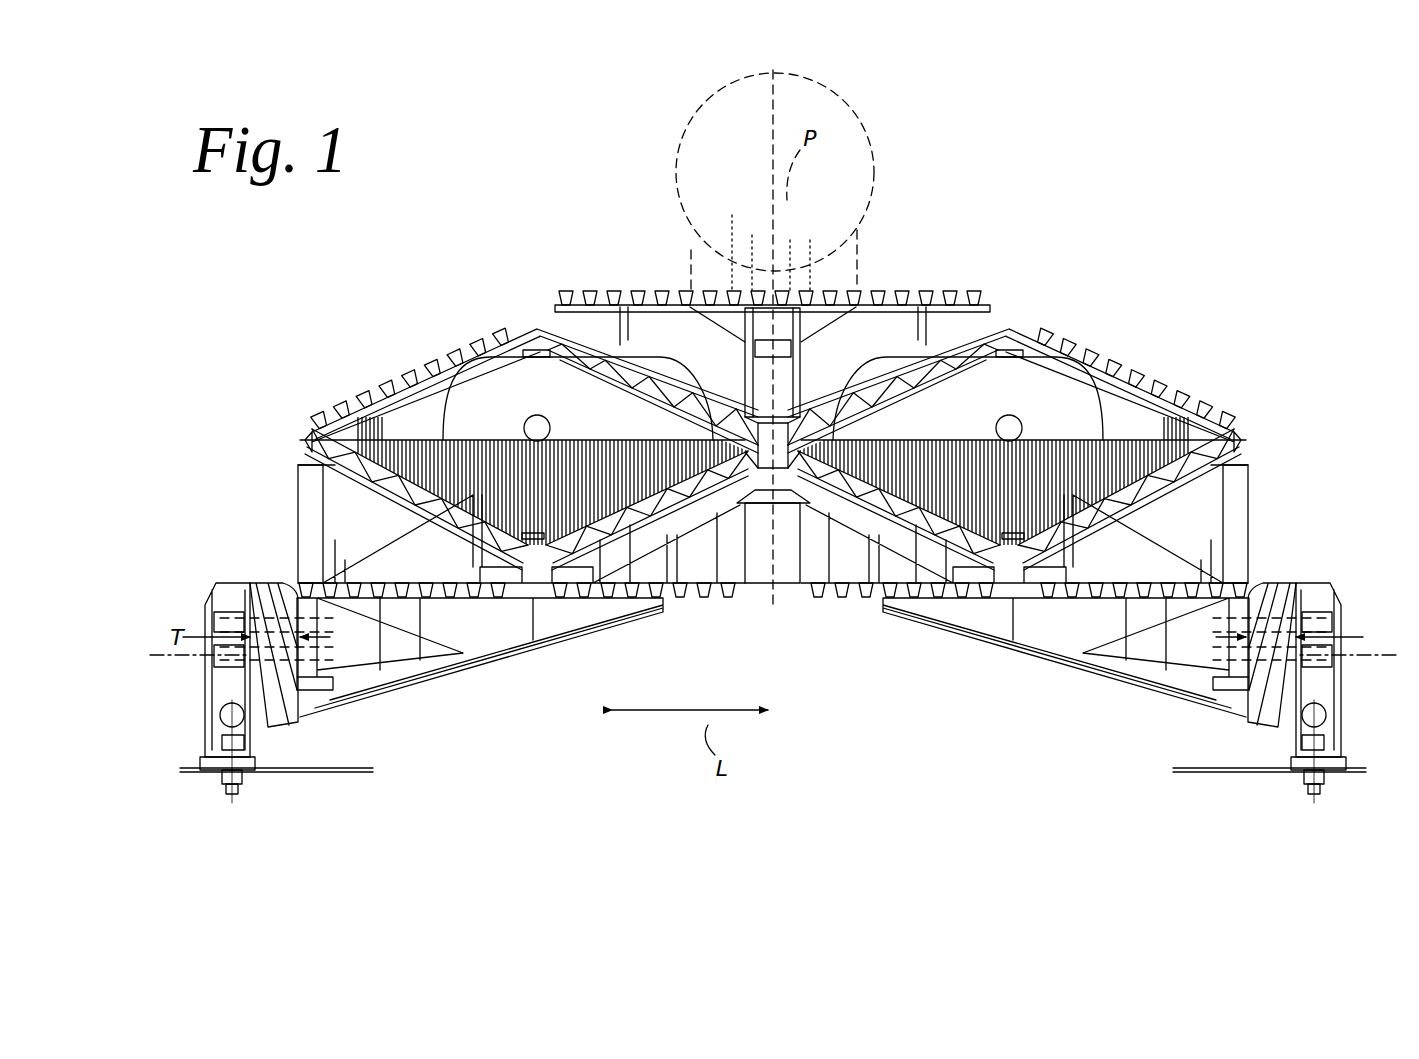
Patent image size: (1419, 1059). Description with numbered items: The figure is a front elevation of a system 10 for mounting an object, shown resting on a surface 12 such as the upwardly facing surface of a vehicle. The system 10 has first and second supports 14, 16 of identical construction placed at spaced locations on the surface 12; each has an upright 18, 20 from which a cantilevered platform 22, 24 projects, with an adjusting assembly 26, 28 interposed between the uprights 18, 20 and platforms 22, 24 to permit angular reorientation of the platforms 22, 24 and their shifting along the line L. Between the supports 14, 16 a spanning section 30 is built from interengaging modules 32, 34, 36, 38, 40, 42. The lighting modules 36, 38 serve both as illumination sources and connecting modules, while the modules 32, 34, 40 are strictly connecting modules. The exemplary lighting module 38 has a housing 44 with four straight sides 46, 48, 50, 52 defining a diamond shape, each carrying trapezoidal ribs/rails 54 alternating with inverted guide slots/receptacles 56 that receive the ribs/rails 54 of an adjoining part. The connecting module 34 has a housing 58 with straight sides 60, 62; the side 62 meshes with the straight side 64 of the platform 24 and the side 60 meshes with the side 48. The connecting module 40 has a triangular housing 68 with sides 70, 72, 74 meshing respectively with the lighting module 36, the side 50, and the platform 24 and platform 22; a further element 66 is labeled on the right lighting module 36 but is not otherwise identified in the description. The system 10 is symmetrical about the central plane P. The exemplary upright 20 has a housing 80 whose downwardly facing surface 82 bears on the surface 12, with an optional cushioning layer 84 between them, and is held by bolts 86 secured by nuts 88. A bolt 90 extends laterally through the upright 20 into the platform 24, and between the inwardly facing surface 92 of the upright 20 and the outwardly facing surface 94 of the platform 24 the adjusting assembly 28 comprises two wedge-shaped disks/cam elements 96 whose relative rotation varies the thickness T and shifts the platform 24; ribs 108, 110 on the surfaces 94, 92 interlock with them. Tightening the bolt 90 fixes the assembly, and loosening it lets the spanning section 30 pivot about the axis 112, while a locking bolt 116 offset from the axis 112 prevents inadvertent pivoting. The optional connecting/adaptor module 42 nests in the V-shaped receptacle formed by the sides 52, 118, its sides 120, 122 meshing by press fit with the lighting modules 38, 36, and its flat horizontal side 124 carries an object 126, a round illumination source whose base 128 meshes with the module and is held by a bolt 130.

The system for mounting an object 10 is at (1085, 275).
The surface 12 is at (1265, 770).
The first support 14 is at (1243, 742).
The second support 16 is at (422, 690).
The upright 18 is at (1340, 605).
The upright 20 is at (212, 655).
The platform 22 is at (1060, 650).
The platform 24 is at (580, 645).
The adjusting assembly 26 is at (1285, 583).
The adjusting assembly 28 is at (263, 585).
The spanning section 30 is at (775, 605).
The connecting module 32 is at (1190, 570).
The connecting module 34 is at (380, 560).
The lighting module 36 is at (1095, 440).
The lighting module 38 is at (497, 430).
The connecting module 40 is at (915, 575).
The connecting/adaptor module 42 is at (840, 380).
The housing 44 is at (360, 400).
The straight side 46 is at (428, 380).
The straight side 48 is at (298, 460).
The straight side 50 is at (640, 620).
The straight side 52 is at (537, 327).
The ribs/rails 54 is at (732, 290).
The guide slots/receptacles 56 is at (752, 290).
The housing 58 is at (285, 585).
The straight side 60 is at (345, 410).
The straight side 62 is at (350, 640).
The straight side 64 is at (560, 650).
The web member 66 is at (1160, 490).
The housing 68 is at (775, 560).
The straight side 70 is at (970, 510).
The straight side 72 is at (580, 500).
The straight side 74 is at (725, 600).
The housing 80 is at (215, 610).
The downwardly facing surface 82 is at (205, 768).
The cushioning layer 84 is at (255, 765).
The bolts 86 is at (240, 795).
The nuts 88 is at (222, 790).
The bolt 90 is at (330, 700).
The laterally inwardly facing surface 92 is at (280, 768).
The laterally outwardly facing surface 94 is at (320, 722).
The disks/cam elements 96 is at (262, 590).
The ribs 108 is at (240, 585).
The ribs 110 is at (290, 590).
The axis 112 is at (220, 665).
The locking bolt 116 is at (228, 590).
The straight side 118 is at (925, 300).
The straight side 120 is at (905, 370).
The straight side 122 is at (620, 360).
The flat, horizontally extending side 124 is at (720, 290).
The object 126 is at (872, 132).
The base 128 is at (790, 290).
The bolt 130 is at (757, 349).